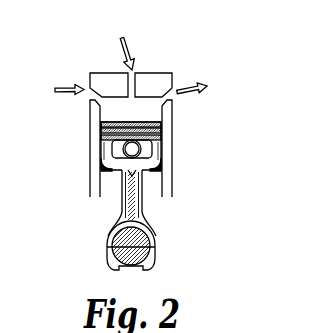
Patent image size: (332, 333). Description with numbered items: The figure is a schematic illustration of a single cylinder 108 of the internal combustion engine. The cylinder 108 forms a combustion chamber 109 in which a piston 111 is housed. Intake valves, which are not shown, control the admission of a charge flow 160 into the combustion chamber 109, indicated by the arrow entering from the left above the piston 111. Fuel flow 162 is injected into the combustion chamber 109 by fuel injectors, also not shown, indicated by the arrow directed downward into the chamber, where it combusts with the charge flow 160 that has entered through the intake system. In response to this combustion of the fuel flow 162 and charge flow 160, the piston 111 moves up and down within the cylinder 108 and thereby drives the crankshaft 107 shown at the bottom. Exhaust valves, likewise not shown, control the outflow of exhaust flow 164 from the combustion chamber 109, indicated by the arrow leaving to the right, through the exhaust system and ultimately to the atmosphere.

The crankshaft 107 is at (125, 245).
The cylinder 108 is at (185, 143).
The combustion chamber 109 is at (112, 110).
The piston 111 is at (153, 151).
The charge flow 160 is at (74, 86).
The fuel flow 162 is at (130, 46).
The exhaust flow 164 is at (186, 89).